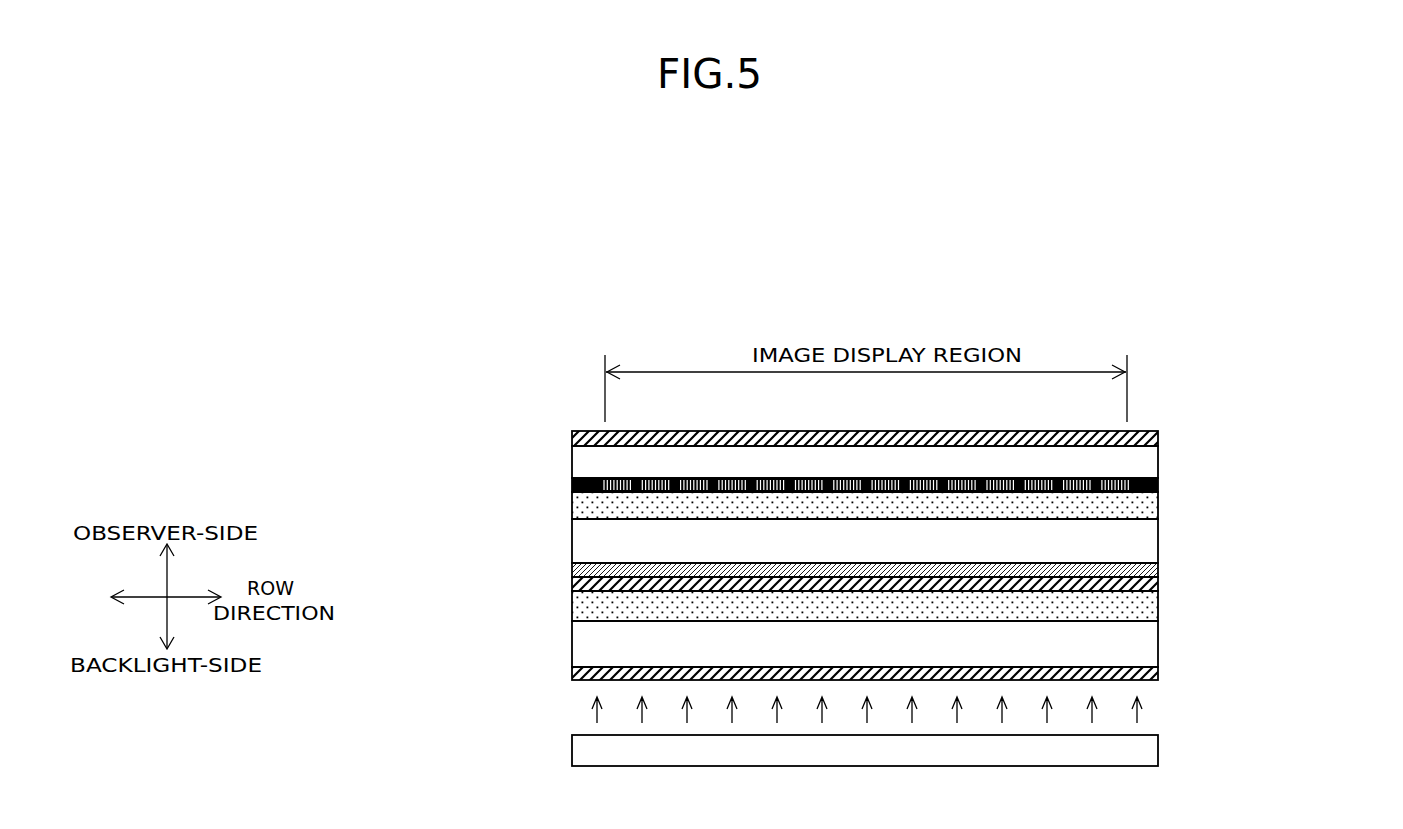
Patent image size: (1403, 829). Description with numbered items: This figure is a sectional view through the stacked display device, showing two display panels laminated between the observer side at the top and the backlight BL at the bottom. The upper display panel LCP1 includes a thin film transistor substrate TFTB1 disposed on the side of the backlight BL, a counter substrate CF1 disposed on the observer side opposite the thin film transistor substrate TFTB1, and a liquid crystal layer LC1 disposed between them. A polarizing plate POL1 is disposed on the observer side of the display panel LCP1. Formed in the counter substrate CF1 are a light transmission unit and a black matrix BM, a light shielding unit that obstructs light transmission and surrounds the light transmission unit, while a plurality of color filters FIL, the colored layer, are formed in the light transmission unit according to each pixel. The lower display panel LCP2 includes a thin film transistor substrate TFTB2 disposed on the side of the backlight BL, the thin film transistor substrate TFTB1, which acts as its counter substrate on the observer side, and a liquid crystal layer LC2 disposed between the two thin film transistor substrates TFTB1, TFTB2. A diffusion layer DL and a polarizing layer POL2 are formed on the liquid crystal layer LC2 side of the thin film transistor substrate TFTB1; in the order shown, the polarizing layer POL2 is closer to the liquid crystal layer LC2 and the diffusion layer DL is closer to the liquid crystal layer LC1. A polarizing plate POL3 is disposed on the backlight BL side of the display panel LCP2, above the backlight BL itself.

The polarizing plate POL1 is at (1160, 440).
The counter substrate CF1 is at (1170, 448).
The color filters FIL is at (618, 478).
The black matrix BM is at (829, 475).
The liquid crystal layer LC1 is at (1160, 508).
The thin film transistor substrate TFTB1 is at (1170, 519).
The diffusion layer DL is at (572, 570).
The polarizing layer POL2 is at (572, 583).
The display panel LCP1 is at (920, 513).
The liquid crystal layer LC2 is at (1160, 608).
The thin film transistor substrate TFTB2 is at (1170, 622).
The polarizing plate POL3 is at (1160, 673).
The display panel LCP2 is at (823, 604).
The backlight BL is at (1160, 752).